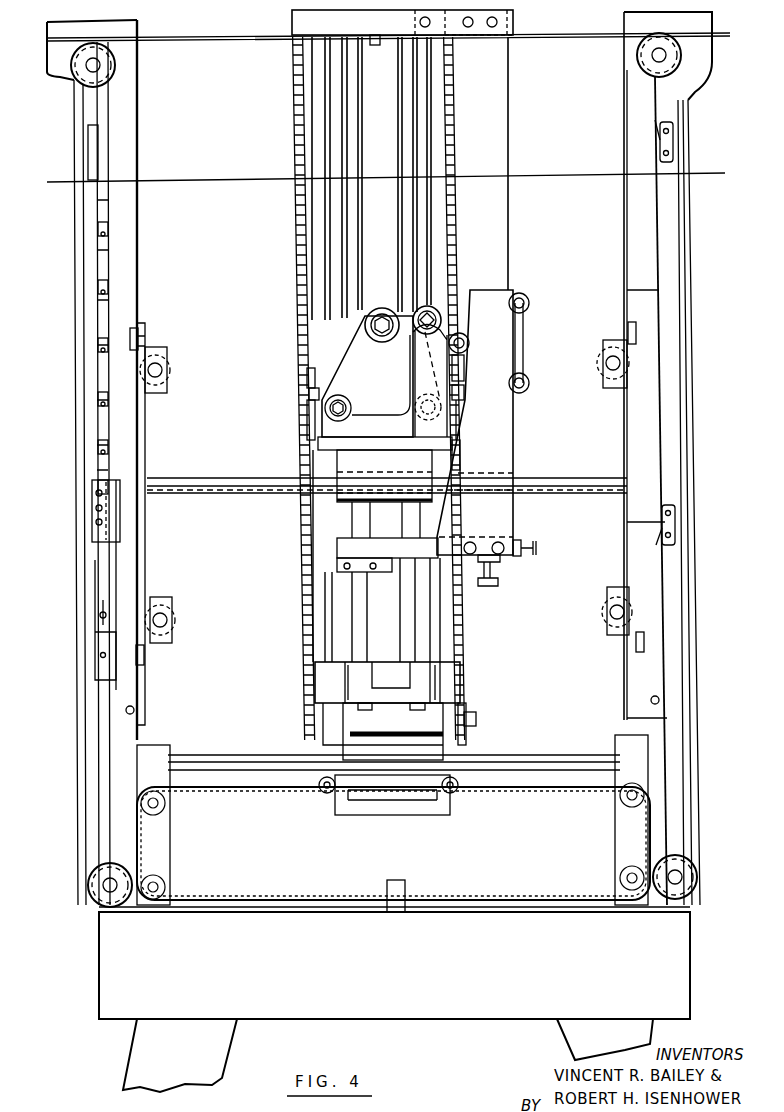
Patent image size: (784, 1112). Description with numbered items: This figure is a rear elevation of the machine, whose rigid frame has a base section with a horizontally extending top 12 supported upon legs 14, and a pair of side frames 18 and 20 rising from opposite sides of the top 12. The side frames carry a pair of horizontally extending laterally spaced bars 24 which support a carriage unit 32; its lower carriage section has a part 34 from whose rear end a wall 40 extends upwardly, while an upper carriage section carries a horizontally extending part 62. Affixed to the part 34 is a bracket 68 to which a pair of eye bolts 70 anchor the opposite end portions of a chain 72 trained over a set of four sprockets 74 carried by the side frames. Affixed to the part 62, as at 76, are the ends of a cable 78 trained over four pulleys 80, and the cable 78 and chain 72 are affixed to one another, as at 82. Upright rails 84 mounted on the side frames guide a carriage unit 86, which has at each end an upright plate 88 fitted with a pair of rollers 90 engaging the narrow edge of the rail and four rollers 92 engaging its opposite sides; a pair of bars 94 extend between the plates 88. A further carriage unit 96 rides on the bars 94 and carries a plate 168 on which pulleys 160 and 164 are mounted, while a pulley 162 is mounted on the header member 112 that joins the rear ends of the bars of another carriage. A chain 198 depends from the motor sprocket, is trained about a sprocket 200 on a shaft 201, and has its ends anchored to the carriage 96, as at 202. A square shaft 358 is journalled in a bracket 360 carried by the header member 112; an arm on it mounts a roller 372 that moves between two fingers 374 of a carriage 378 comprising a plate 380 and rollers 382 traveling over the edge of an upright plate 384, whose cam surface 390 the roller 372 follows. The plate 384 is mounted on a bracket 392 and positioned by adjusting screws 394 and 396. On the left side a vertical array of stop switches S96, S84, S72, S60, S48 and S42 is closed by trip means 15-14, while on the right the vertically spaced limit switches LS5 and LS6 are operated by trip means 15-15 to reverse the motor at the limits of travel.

The top 12 is at (412, 1019).
The legs 14 is at (225, 1052).
The side frame 18 is at (676, 313).
The side frame 20 is at (126, 159).
The bars 24 is at (236, 755).
The carriage unit 32 is at (512, 650).
The part 34 is at (324, 793).
The wall 40 is at (470, 695).
The part 62 is at (292, 22).
The bracket 68 is at (392, 795).
The eye bolts 70 is at (455, 793).
The chain 72 is at (528, 786).
The sprockets 74 is at (165, 805).
The cable anchorage 76 is at (375, 46).
The cable 78 is at (564, 40).
The pulleys 80 is at (113, 68).
The cable-chain connection 82 is at (400, 884).
The upright rails 84 is at (128, 225).
The carriage unit 86 is at (207, 458).
The upright plate 88 is at (146, 430).
The rollers 90 is at (170, 362).
The rollers 92 is at (138, 330).
The bars 94 is at (234, 500).
The carriage unit 96 is at (335, 443).
The header member 112 is at (381, 372).
The pulley 160 is at (316, 440).
The pulley 162 is at (307, 418).
The pulley 164 is at (307, 376).
The plate 168 is at (309, 394).
The chain 198 is at (456, 240).
The sprocket 200 is at (467, 733).
The shaft 201 is at (477, 718).
The chain anchorage 202 is at (463, 428).
The shaft 358 is at (424, 305).
The bracket 360 is at (440, 368).
The roller 372 is at (470, 340).
The fingers 374 is at (455, 326).
The carriage 378 is at (530, 273).
The plate 380 is at (524, 348).
The rollers 382 is at (529, 301).
The upright plate 384 is at (513, 448).
The cam surface 390 is at (460, 456).
The bracket 392 is at (402, 572).
The adjusting screw 394 is at (540, 549).
The adjusting screw 396 is at (500, 578).
The trip means 15-14 is at (116, 488).
The trip means 15-15 is at (655, 483).
The limit switch LS5 is at (676, 135).
The limit switch LS6 is at (676, 523).
The stop switch S96 is at (97, 229).
The stop switch S84 is at (97, 287).
The stop switch S72 is at (97, 345).
The stop switch S60 is at (97, 398).
The stop switch S48 is at (97, 447).
The stop switch S42 is at (95, 487).